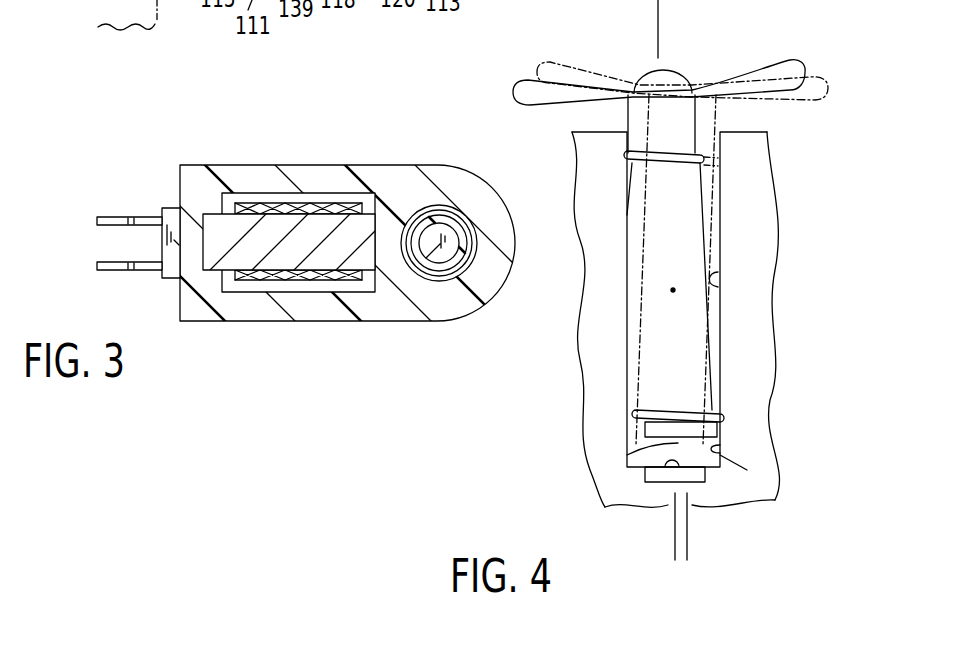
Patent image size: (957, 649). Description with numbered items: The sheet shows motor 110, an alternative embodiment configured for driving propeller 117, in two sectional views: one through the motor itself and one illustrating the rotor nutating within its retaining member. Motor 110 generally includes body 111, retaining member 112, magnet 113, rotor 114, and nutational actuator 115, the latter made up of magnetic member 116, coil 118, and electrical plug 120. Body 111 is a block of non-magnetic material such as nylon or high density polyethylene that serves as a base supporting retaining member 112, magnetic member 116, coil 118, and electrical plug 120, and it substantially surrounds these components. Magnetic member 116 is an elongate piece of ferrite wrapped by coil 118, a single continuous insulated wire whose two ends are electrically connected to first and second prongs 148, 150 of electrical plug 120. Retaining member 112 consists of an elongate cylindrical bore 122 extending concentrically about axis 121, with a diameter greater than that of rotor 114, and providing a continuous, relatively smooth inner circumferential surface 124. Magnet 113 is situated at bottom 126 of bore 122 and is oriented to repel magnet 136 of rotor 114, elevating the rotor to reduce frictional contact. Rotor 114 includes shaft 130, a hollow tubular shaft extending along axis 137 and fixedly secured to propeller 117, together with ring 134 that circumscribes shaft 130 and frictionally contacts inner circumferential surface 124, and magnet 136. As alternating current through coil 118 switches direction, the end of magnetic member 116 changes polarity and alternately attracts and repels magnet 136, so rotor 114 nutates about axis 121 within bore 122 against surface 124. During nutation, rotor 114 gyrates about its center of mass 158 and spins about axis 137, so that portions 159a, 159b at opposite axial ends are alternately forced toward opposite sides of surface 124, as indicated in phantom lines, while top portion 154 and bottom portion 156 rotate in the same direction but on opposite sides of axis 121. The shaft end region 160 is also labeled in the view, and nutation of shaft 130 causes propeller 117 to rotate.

In FIG. 3, the motor 110 is at (25, 114).
In FIG. 4, the motor 110 is at (830, 53).
In FIG. 3, the body 111 is at (243, 165).
In FIG. 4, the body 111 is at (622, 500).
In FIG. 3, the retaining member 112 is at (376, 284).
In FIG. 4, the retaining member 112 is at (736, 513).
In FIG. 4, the magnet 113 is at (645, 485).
In FIG. 3, the rotor 114 is at (467, 214).
In FIG. 4, the rotor 114 is at (585, 303).
In FIG. 3, the nutational actuator 115 is at (298, 206).
In FIG. 3, the magnetic member 116 is at (370, 192).
In FIG. 4, the propeller 117 is at (738, 72).
In FIG. 3, the coil 118 is at (298, 290).
In FIG. 3, the electrical plug 120 is at (116, 217).
In FIG. 4, the axis 121 is at (673, 525).
In FIG. 3, the bore 122 is at (450, 315).
In FIG. 4, the bore 122 is at (718, 287).
In FIG. 3, the inner circumferential surface 124 is at (423, 206).
In FIG. 4, the inner circumferential surface 124 is at (755, 486).
In FIG. 4, the bottom 126 is at (672, 459).
In FIG. 3, the shaft 130 is at (442, 217).
In FIG. 4, the shaft 130 is at (703, 240).
In FIG. 3, the ring 134 is at (424, 280).
In FIG. 4, the ring 134 is at (628, 157).
In FIG. 3, the magnet 136 is at (384, 314).
In FIG. 4, the axis 137 is at (660, 30).
In FIG. 3, the first prong 148 is at (130, 272).
In FIG. 3, the second prong 150 is at (130, 216).
In FIG. 4, the top portion 154 is at (569, 127).
In FIG. 4, the bottom portion 156 is at (741, 446).
In FIG. 4, the center of mass 158 is at (675, 292).
In FIG. 4, the portion 159a is at (700, 196).
In FIG. 4, the portion 159b is at (718, 386).
In FIG. 4, the shaft end 160 is at (627, 455).